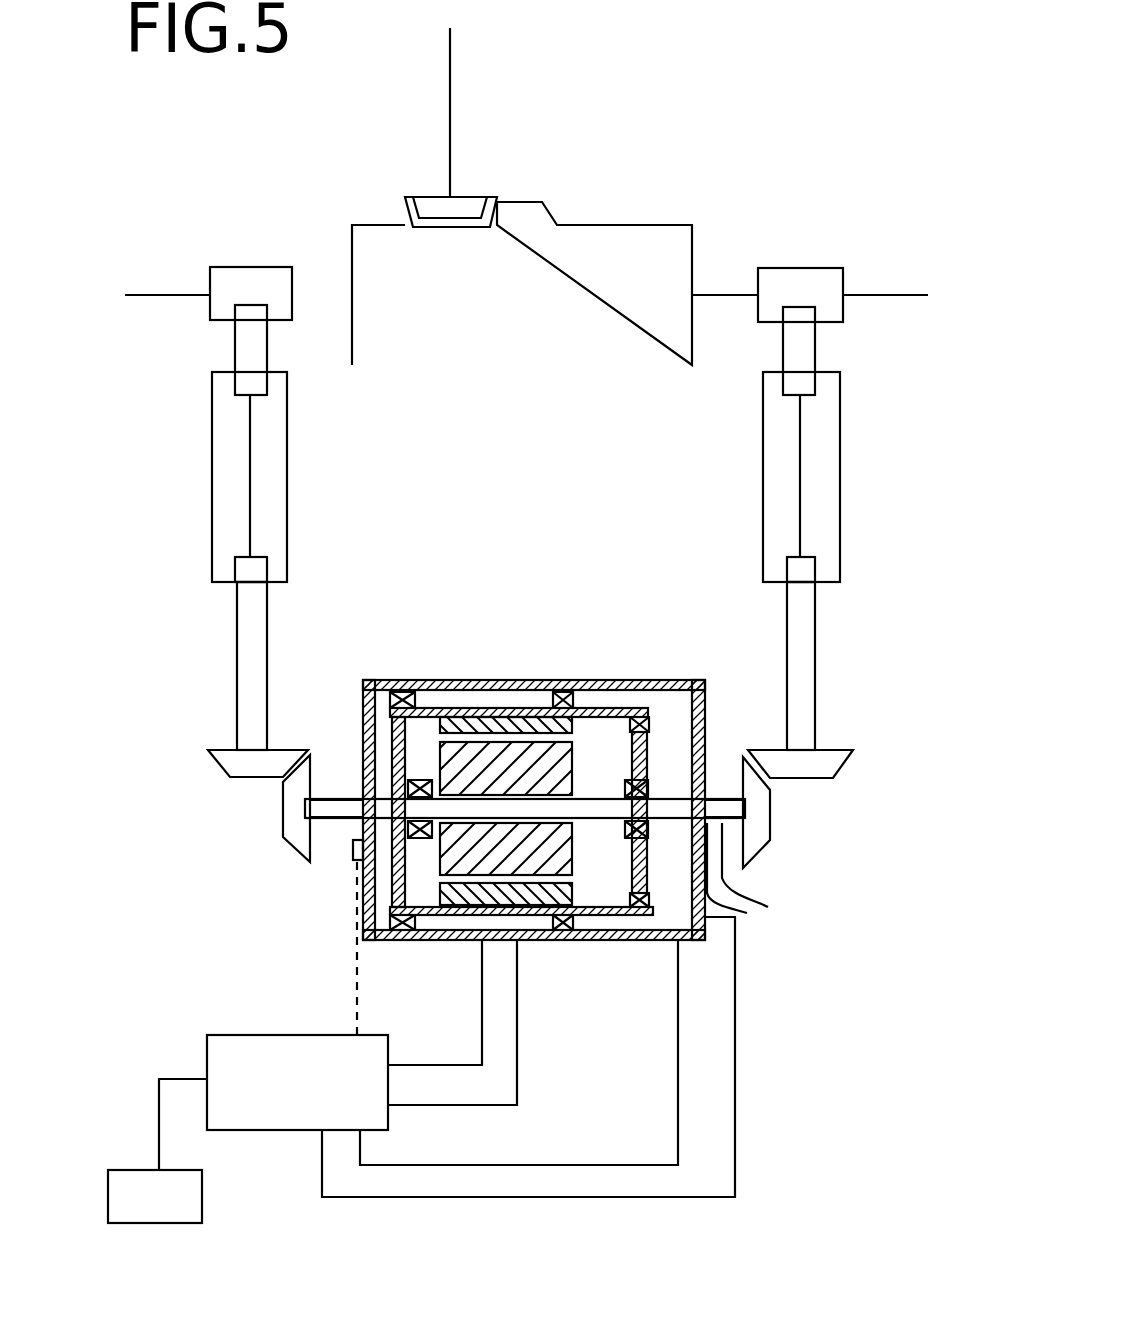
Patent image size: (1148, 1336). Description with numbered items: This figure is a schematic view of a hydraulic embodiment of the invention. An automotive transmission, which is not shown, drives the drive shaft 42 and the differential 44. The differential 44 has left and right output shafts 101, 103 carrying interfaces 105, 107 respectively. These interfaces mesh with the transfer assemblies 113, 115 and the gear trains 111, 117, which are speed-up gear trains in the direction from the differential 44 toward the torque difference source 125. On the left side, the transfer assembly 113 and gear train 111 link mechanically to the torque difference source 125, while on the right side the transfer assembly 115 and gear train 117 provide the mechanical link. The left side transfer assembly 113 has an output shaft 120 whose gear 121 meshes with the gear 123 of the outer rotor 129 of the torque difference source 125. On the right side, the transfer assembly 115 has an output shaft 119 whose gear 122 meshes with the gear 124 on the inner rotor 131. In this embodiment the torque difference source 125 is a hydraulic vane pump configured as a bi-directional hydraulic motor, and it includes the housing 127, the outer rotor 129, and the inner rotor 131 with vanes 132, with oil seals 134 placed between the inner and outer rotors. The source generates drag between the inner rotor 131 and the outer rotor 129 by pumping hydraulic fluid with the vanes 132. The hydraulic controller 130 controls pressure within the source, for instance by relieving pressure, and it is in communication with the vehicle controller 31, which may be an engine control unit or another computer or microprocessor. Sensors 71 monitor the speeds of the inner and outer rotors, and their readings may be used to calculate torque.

The vehicle controller 31 is at (157, 1223).
The drive shaft 42 is at (450, 140).
The differential 44 is at (625, 225).
The sensors 71 is at (350, 858).
The output shaft 101 is at (170, 292).
The output shaft 103 is at (875, 292).
The interface 105 is at (245, 267).
The interface 107 is at (795, 268).
The gear train 111 is at (235, 335).
The transfer assembly 113 is at (212, 452).
The transfer assembly 115 is at (840, 430).
The gear train 117 is at (815, 350).
The output shaft 119 is at (815, 680).
The output shaft 120 is at (237, 672).
The gear 121 is at (210, 760).
The gear 122 is at (845, 760).
The gear 123 is at (295, 857).
The gear 124 is at (758, 850).
The torque difference source 125 is at (477, 668).
The housing 127 is at (590, 685).
The outer rotor 129 is at (628, 712).
The controller 130 is at (207, 1060).
The inner rotor 131 is at (777, 880).
The vanes 132 is at (513, 742).
The oil seals 134 is at (652, 720).